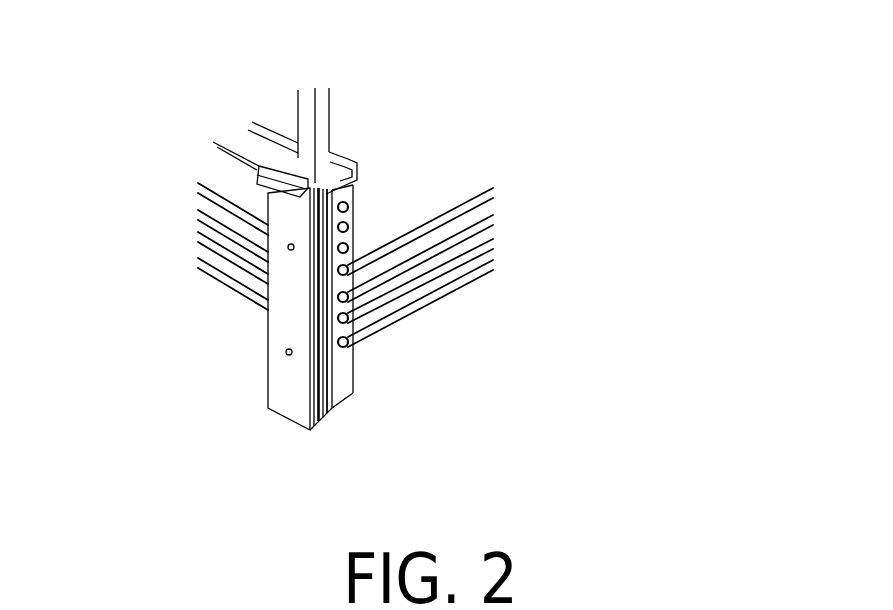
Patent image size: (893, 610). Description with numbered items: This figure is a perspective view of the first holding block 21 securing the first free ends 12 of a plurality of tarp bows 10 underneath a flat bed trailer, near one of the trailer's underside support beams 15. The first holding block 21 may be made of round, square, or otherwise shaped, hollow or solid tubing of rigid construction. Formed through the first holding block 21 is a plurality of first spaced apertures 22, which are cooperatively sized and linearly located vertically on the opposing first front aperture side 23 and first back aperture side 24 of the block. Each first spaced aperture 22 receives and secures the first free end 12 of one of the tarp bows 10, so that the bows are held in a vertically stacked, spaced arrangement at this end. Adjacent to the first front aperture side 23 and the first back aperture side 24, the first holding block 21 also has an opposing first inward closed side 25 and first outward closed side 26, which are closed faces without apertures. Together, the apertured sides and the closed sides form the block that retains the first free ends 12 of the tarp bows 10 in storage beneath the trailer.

The tarp bows 10 is at (530, 220).
The first free end 12 is at (197, 213).
The underside support beams 15 is at (326, 117).
The first holding block 21 is at (437, 102).
The first spaced apertures 22 is at (350, 228).
The first front aperture side 23 is at (338, 405).
The first back aperture side 24 is at (298, 384).
The first inward closed side 25 is at (333, 363).
The first outward closed side 26 is at (295, 402).